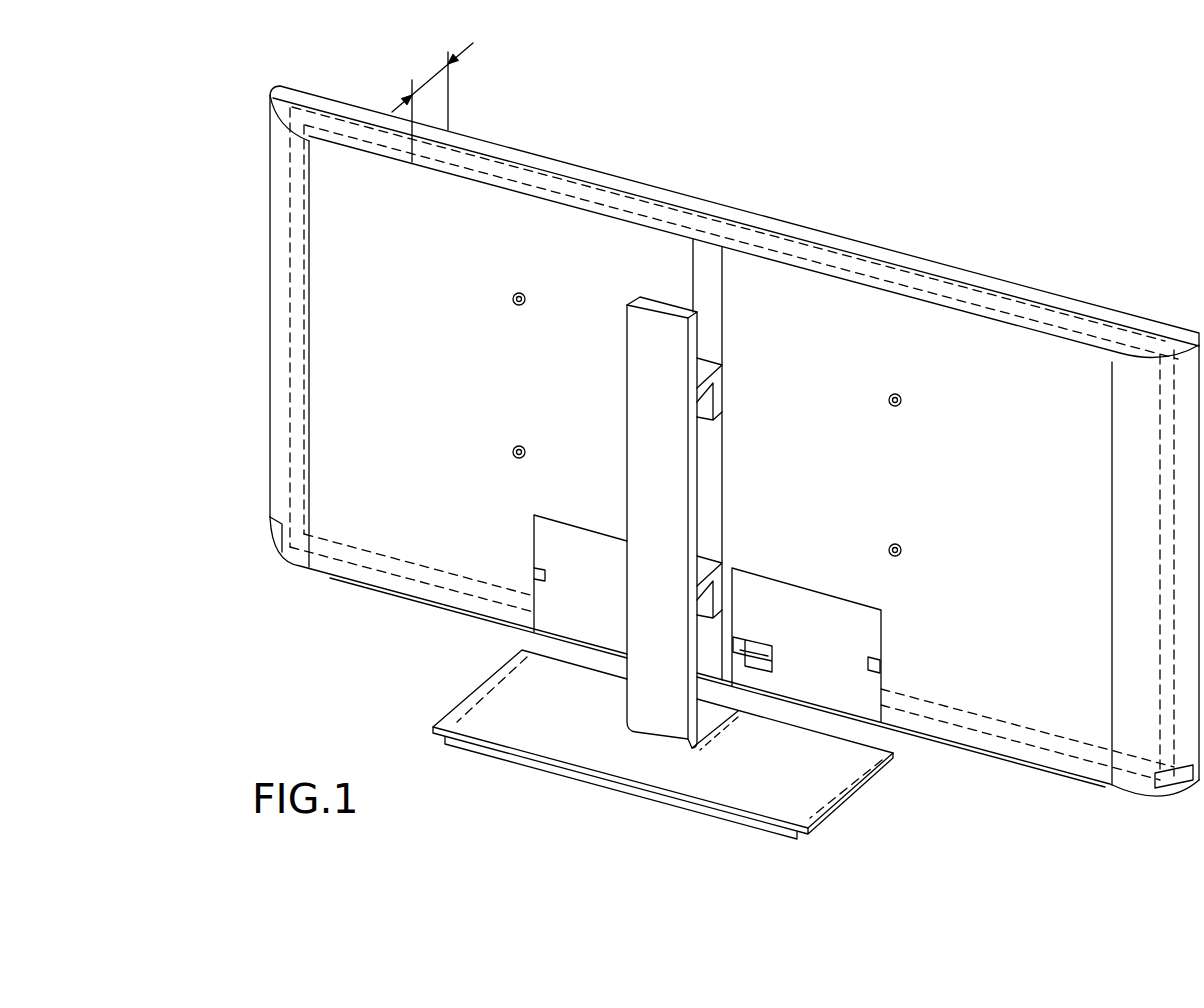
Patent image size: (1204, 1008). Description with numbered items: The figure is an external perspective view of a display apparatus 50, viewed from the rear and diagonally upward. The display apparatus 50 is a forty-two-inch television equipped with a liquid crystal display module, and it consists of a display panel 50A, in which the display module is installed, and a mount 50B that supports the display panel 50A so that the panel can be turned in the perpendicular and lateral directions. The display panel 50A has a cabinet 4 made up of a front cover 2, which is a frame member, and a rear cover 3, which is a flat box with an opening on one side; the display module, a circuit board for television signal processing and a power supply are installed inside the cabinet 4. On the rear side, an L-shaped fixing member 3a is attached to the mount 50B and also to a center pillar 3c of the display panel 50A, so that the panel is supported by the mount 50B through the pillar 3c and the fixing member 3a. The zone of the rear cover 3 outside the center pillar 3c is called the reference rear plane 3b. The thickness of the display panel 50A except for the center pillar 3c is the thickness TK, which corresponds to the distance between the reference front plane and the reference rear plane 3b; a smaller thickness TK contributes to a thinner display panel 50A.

The display apparatus 50 is at (946, 175).
The display panel 50A is at (347, 620).
The mount 50B is at (447, 697).
The cabinet 4 is at (1130, 243).
The front cover 2 is at (1150, 322).
The rear cover 3 is at (1029, 348).
The fixing member 3a is at (642, 386).
The reference rear plane 3b is at (327, 346).
The center pillar 3c is at (712, 283).
The thickness TK is at (432, 102).